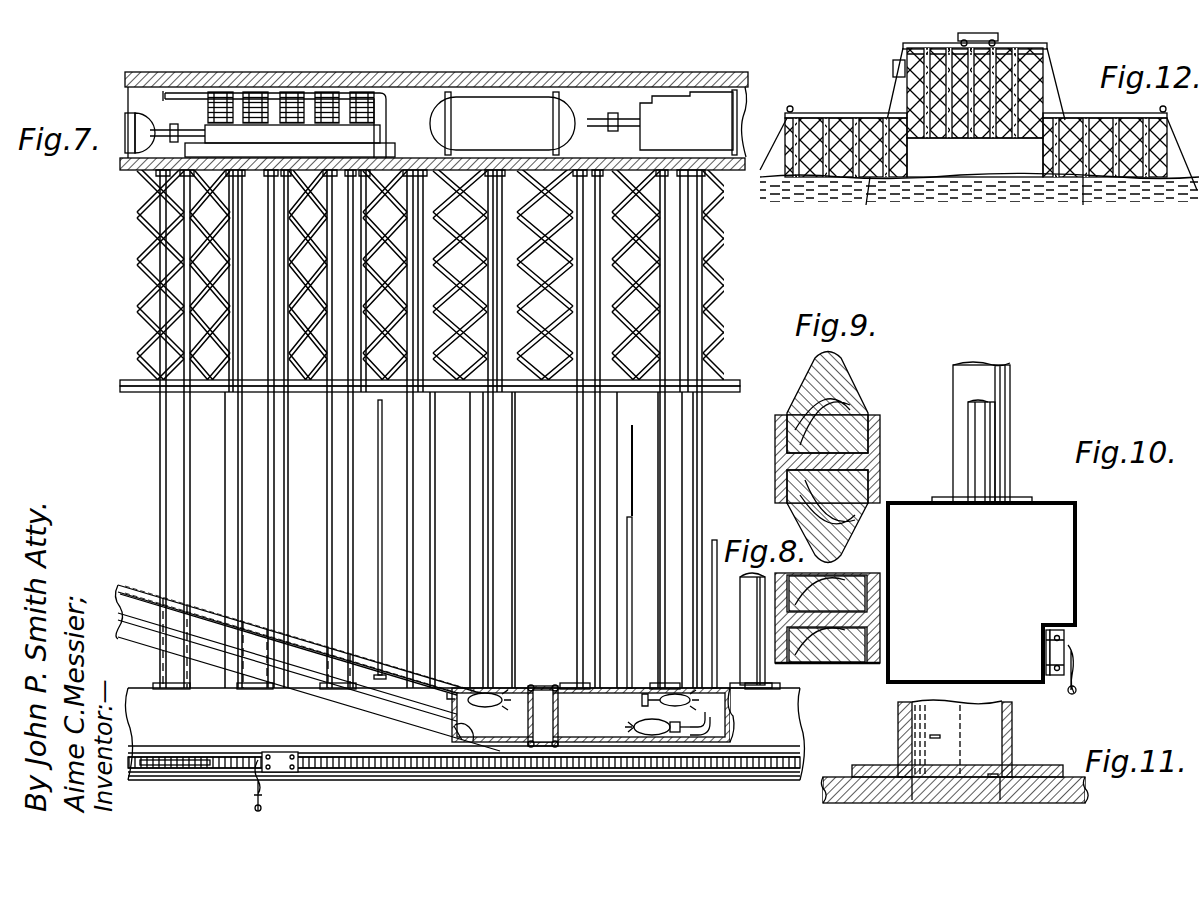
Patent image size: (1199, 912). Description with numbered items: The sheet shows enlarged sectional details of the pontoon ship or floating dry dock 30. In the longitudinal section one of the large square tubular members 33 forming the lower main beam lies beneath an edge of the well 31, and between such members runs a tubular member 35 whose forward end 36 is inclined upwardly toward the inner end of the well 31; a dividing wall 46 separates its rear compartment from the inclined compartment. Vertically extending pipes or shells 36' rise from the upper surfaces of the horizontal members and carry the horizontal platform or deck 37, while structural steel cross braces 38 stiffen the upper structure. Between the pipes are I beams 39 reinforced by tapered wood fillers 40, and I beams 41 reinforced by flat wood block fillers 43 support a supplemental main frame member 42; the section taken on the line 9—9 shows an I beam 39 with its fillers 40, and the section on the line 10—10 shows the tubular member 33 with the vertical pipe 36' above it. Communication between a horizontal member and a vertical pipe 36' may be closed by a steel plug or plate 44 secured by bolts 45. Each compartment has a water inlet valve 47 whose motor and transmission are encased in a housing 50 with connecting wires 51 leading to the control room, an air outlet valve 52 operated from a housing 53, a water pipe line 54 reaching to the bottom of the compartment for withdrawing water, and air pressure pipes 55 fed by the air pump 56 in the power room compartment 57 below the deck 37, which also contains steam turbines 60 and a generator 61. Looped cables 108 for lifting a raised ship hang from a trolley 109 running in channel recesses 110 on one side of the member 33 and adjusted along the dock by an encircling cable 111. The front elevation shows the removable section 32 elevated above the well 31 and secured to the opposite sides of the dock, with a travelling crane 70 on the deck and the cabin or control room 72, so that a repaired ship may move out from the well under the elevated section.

In FIG. 7, the section line 9- 9 is at (642, 450).
In FIG. 7, the section line 10- 10 is at (230, 676).
In FIG. 12, the pontoon ship 30 is at (1175, 127).
In FIG. 12, the well 31 is at (960, 165).
In FIG. 12, the removable section 32 is at (1062, 57).
In FIG. 7, the tubular members 33 is at (333, 738).
In FIG. 10, the tubular members 33 is at (1078, 544).
In FIG. 11, the tubular members 33 is at (1086, 791).
In FIG. 7, the tubular members 35 is at (600, 736).
In FIG. 7, the vertically extending pipes 36 is at (317, 651).
In FIG. 7, the vertical pipe 36' is at (431, 429).
In FIG. 10, the vertical pipe 36' is at (1006, 432).
In FIG. 11, the vertical pipe 36' is at (958, 750).
In FIG. 7, the horizontal platform or deck 37 is at (586, 75).
In FIG. 7, the structural steel cross braces 38 is at (718, 296).
In FIG. 7, the I beams 39 is at (613, 422).
In FIG. 9, the I beams 39 is at (880, 445).
In FIG. 10, the I beams 39 is at (986, 434).
In FIG. 7, the tapered wood fillers 40 is at (613, 444).
In FIG. 9, the tapered wood fillers 40 is at (854, 396).
In FIG. 7, the I beams 41 is at (598, 329).
In FIG. 8, the I beams 41 is at (874, 664).
In FIG. 7, the supplemental main frame member 42 is at (728, 380).
In FIG. 8, the flat wood block fillers 43 is at (856, 573).
In FIG. 7, the steel plugs or plates 44 is at (336, 634).
In FIG. 11, the steel plugs or plates 44 is at (982, 775).
In FIG. 11, the bolts 45 is at (917, 776).
In FIG. 7, the dividing walls 46 is at (566, 720).
In FIG. 7, the water inlet valve 47 is at (463, 740).
In FIG. 7, the housing 50 is at (655, 736).
In FIG. 7, the connecting wires 51 is at (632, 725).
In FIG. 7, the air outlet valve 52 is at (130, 112).
In FIG. 7, the housing 53 is at (500, 690).
In FIG. 8, the housing 53 is at (702, 722).
In FIG. 7, the water pipe line 54 is at (714, 540).
In FIG. 7, the air pipe 55 is at (414, 506).
In FIG. 7, the air pump 56 is at (272, 140).
In FIG. 7, the power room compartment 57 is at (405, 95).
In FIG. 7, the steam turbines 60 is at (710, 137).
In FIG. 7, the generator 61 is at (516, 133).
In FIG. 12, the travelling cranes 70 is at (956, 34).
In FIG. 12, the cabin or control room 72 is at (893, 68).
In FIG. 7, the looped cables 108 is at (264, 804).
In FIG. 10, the looped cables 108 is at (1076, 692).
In FIG. 7, the trolley 109 is at (279, 752).
In FIG. 10, the trolley 109 is at (1068, 640).
In FIG. 7, the bar 110 is at (192, 752).
In FIG. 10, the bar 110 is at (1050, 646).
In FIG. 7, the encircling cable 111 is at (148, 752).